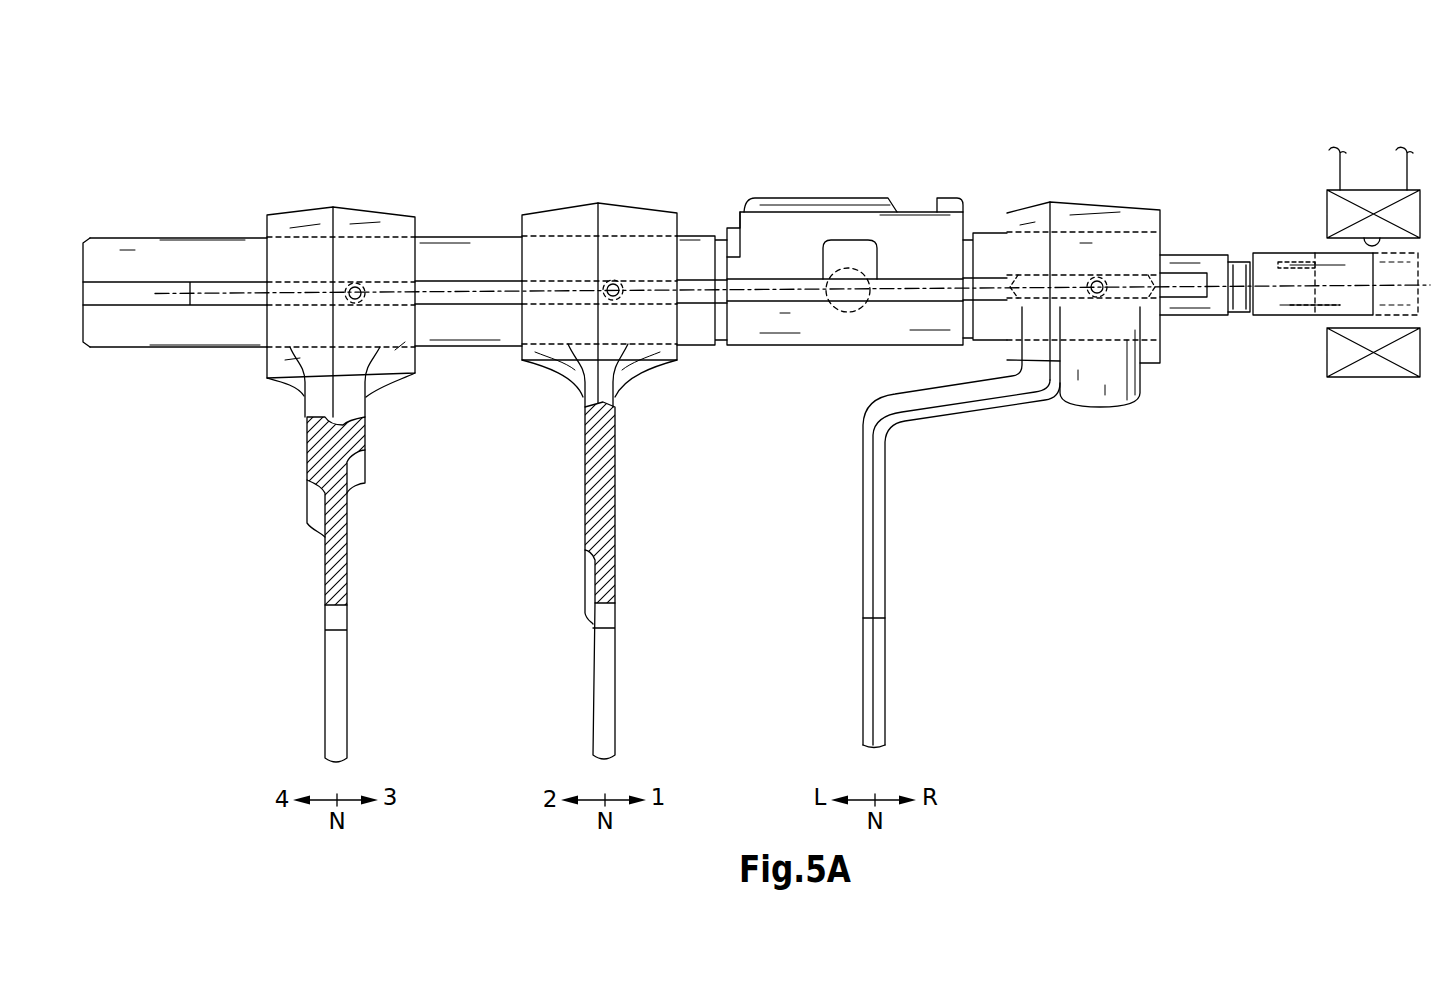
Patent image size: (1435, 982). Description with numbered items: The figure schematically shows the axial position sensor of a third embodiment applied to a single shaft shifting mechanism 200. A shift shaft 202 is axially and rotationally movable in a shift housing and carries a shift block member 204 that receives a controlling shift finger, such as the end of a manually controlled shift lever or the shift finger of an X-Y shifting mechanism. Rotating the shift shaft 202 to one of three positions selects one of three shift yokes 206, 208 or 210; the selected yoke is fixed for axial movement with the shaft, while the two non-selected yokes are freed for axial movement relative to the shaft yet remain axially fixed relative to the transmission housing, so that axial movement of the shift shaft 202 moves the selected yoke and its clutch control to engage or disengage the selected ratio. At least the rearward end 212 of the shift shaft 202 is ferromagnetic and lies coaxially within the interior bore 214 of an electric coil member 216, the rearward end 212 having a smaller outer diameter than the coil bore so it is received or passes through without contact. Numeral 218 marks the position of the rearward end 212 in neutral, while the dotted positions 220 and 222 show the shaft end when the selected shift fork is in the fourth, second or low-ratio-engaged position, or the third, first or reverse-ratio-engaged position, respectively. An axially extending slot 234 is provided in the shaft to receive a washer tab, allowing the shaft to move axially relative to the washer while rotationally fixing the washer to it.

The single shaft shifting mechanism 200 is at (762, 121).
The shift shaft 202 is at (218, 280).
The shift block member 204 is at (864, 183).
The shift yoke 206 is at (383, 225).
The shift yoke 208 is at (623, 222).
The shift yoke 210 is at (1102, 223).
The rearward end of the shift shaft 212 is at (1306, 238).
The interior bore 214 is at (1378, 238).
The electric coil member 216 is at (1382, 396).
The neutral position of the rearward end 218 is at (1353, 297).
The first engaged position of the shaft end 220 is at (1278, 293).
The second engaged position of the shaft end 222 is at (1387, 297).
The axially extending slot 234 is at (1292, 267).